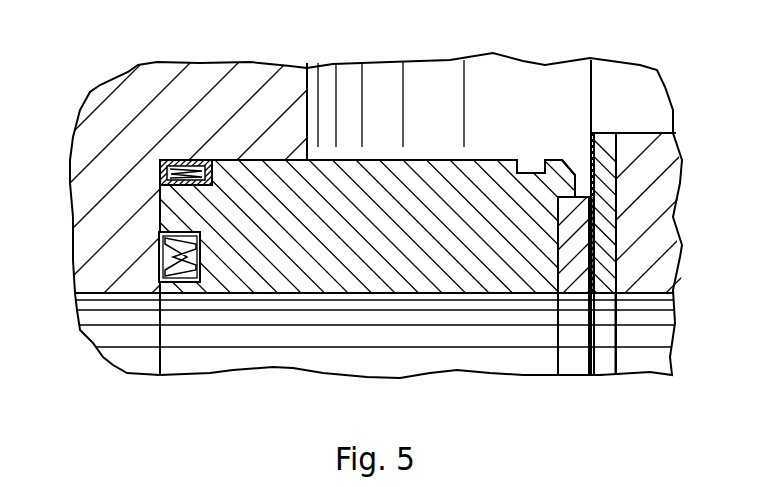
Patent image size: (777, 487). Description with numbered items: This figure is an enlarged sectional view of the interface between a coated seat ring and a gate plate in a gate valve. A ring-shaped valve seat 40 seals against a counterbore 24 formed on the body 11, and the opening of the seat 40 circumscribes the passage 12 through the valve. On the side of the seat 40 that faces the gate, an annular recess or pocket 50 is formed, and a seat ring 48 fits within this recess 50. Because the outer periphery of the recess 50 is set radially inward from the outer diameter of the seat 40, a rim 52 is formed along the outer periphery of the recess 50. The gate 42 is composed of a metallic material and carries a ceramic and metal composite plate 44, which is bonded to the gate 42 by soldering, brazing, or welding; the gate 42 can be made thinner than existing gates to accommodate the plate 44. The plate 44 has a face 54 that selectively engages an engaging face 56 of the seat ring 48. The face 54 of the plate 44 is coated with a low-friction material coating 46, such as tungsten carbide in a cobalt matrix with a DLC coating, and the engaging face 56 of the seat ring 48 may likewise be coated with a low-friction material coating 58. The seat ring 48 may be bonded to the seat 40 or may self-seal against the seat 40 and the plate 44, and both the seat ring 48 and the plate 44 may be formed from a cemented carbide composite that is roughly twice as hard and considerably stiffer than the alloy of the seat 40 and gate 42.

The body 11 is at (205, 83).
The passage 12 is at (118, 293).
The counterbore 24 is at (252, 162).
The valve seat 40 is at (412, 168).
The gate 42 is at (664, 189).
The plate 44 is at (603, 270).
The low-friction material coating 46 is at (593, 132).
The seat ring 48 is at (597, 253).
The recess 50 is at (597, 228).
The rim 52 is at (597, 220).
The face 54 is at (578, 203).
The engaging face 56 is at (597, 227).
The low-friction material coating 58 is at (590, 198).